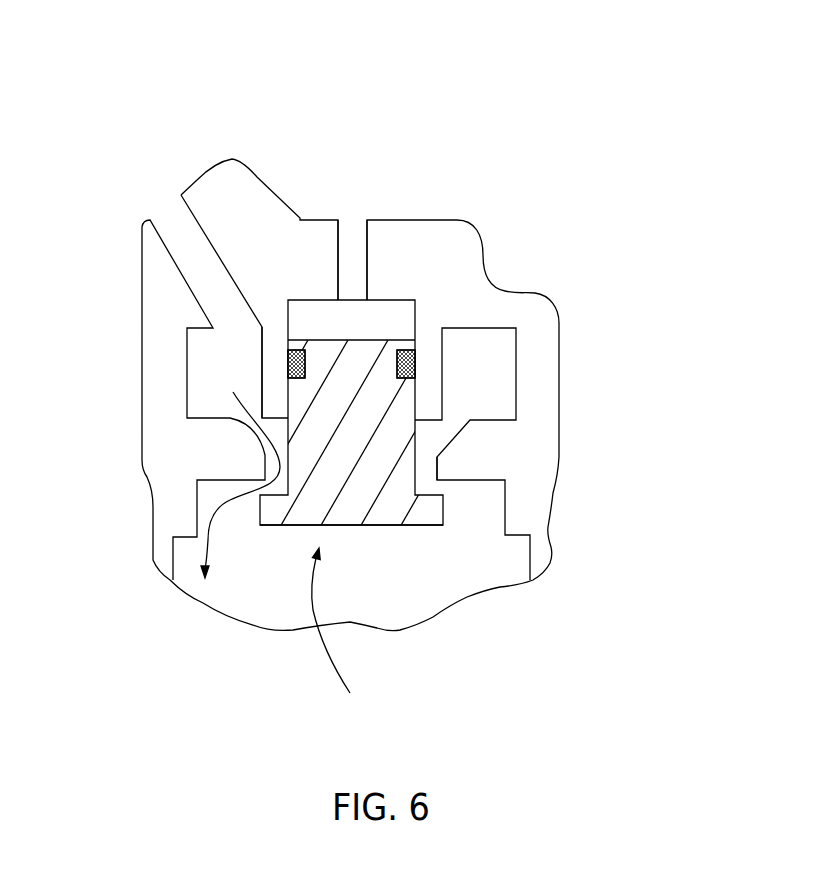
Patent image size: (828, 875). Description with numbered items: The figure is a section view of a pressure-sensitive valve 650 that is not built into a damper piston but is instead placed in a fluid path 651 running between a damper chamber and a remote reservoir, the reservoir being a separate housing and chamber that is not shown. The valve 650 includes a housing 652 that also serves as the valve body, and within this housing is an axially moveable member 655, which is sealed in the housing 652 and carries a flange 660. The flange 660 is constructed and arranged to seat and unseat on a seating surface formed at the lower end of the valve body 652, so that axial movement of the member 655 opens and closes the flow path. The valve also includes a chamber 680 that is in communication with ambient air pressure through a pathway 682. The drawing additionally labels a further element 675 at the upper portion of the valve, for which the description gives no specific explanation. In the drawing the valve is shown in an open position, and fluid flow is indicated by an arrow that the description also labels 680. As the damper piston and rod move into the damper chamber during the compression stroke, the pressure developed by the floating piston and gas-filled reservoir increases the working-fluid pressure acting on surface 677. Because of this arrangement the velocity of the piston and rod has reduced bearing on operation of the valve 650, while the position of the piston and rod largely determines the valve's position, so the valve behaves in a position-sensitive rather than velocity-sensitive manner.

The pressure-sensitive valve 650 is at (349, 636).
The fluid path 651 is at (189, 253).
The housing 652 is at (532, 448).
The axially moveable member 655 is at (323, 427).
The flange 660 is at (257, 508).
The sealing member 675 is at (330, 340).
The surface 677 is at (385, 525).
The chamber 680 is at (390, 322).
The pathway 682 is at (350, 243).